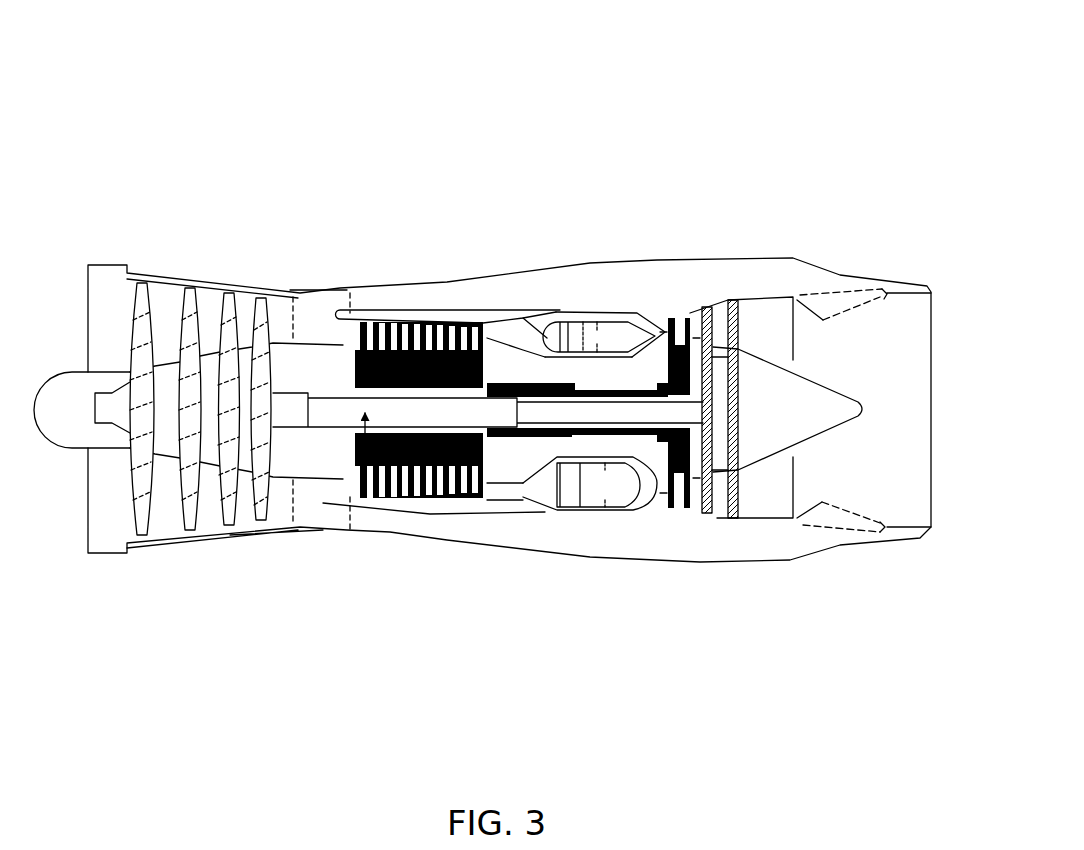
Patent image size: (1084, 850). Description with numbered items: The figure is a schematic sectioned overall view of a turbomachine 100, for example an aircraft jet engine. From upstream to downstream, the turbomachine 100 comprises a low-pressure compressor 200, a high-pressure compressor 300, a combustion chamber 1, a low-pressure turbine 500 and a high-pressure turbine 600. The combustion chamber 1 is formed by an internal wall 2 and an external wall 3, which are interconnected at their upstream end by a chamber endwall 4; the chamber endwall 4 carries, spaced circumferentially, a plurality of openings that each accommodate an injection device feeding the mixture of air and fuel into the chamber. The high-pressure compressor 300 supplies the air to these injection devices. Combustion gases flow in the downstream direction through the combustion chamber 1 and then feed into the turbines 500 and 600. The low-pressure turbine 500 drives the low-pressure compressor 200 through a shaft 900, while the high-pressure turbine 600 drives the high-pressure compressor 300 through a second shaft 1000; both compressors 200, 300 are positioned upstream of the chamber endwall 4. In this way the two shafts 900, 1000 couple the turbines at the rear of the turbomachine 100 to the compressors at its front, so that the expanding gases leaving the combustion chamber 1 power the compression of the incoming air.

The turbomachine 100 is at (655, 106).
The low-pressure compressor 200 is at (184, 292).
The high-pressure compressor 300 is at (403, 312).
The shaft 1000 is at (353, 481).
The combustion chamber 1 is at (582, 331).
The internal wall 2 is at (624, 308).
The external wall 3 is at (596, 359).
The chamber endwall 4 is at (541, 341).
The low-pressure turbine 500 is at (678, 326).
The high-pressure turbine 600 is at (720, 309).
The shaft 900 is at (637, 434).